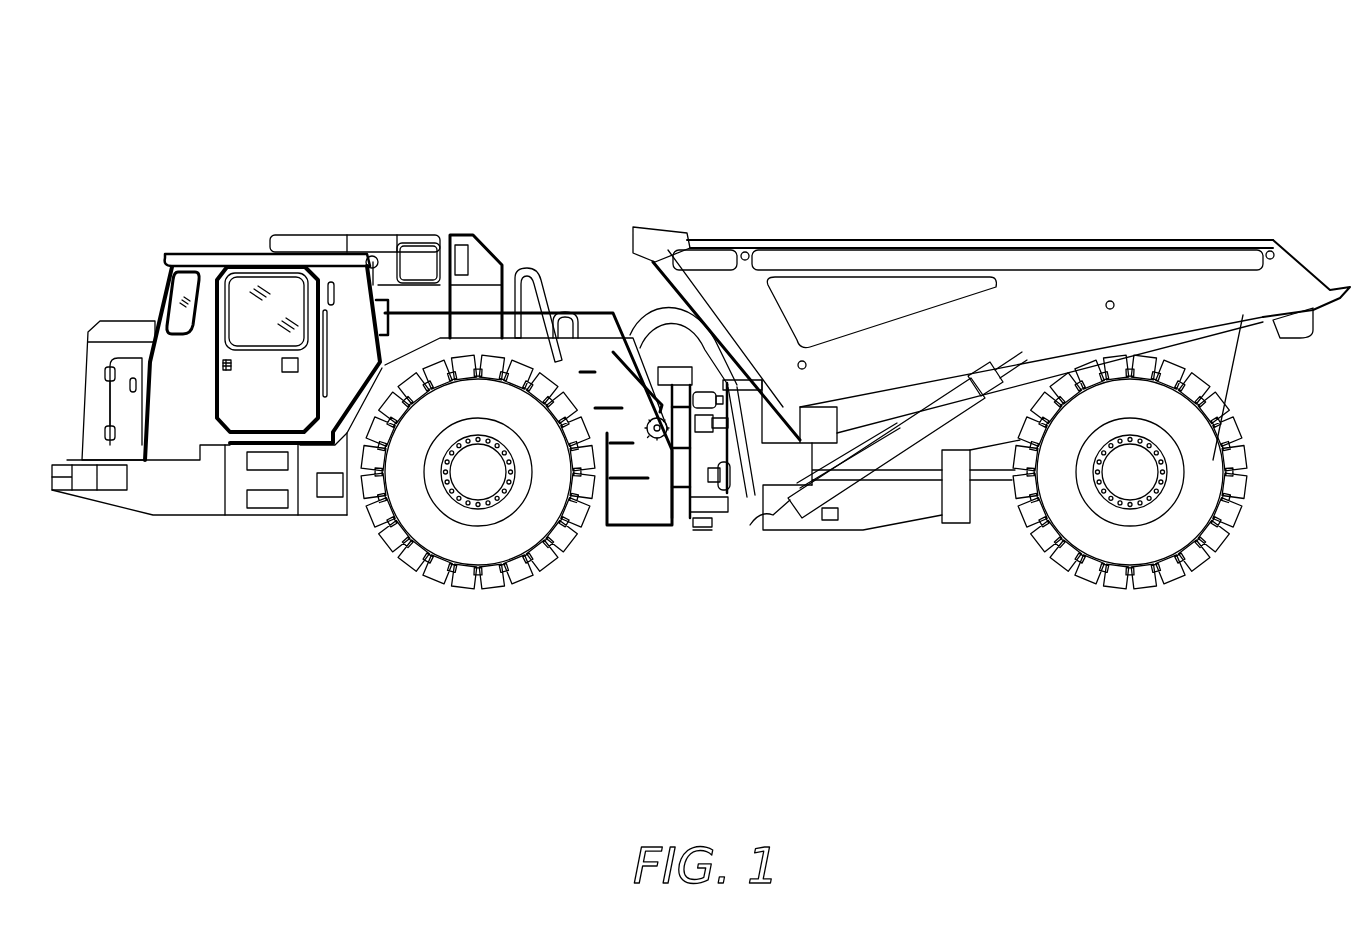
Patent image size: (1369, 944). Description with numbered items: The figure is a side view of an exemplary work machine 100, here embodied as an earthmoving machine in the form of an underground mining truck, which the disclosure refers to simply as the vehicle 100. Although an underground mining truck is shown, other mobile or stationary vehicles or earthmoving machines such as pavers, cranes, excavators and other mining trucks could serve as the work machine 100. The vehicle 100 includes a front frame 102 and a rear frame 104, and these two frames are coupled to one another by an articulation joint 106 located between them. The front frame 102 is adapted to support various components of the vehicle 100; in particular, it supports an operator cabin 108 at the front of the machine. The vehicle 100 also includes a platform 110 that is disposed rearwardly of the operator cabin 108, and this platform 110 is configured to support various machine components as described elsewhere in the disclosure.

The work machine 100 is at (1172, 96).
The front frame 102 is at (190, 483).
The rear frame 104 is at (995, 468).
The articulation joint 106 is at (705, 527).
The operator cabin 108 is at (190, 256).
The platform 110 is at (602, 336).